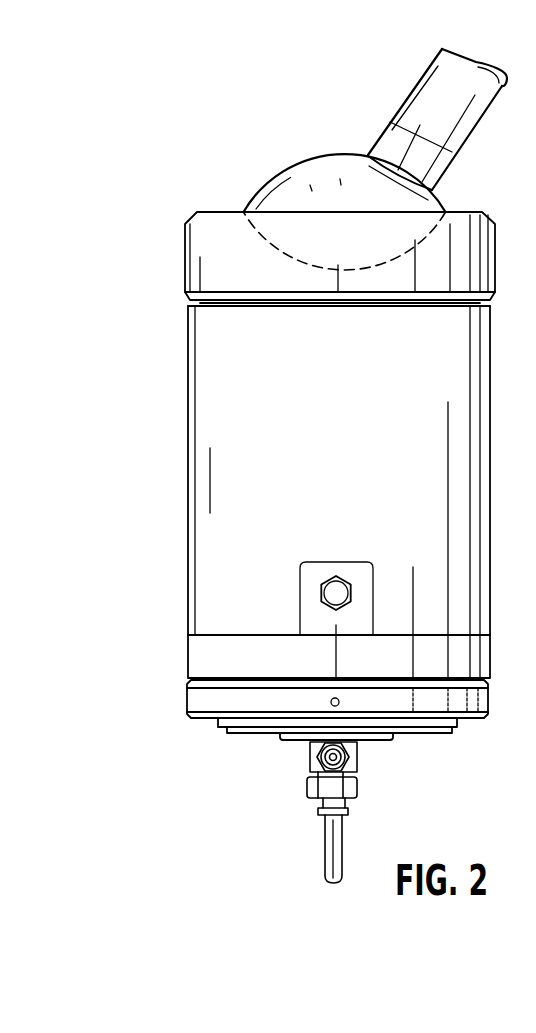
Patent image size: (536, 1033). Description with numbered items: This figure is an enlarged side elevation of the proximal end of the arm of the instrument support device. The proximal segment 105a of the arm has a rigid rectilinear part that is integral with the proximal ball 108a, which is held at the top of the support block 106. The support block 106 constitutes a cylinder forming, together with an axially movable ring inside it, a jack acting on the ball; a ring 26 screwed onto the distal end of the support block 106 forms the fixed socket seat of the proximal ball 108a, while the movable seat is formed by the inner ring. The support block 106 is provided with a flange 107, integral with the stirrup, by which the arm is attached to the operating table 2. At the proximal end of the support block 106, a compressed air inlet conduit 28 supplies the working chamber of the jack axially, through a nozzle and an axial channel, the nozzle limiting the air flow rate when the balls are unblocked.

The proximal segment 105a is at (398, 87).
The proximal ball 108a is at (302, 190).
The ring 26 is at (208, 276).
The support block 106 is at (205, 404).
The operating table 2 is at (205, 662).
The flange 107 is at (200, 700).
The compressed air inlet conduit 28 is at (330, 848).